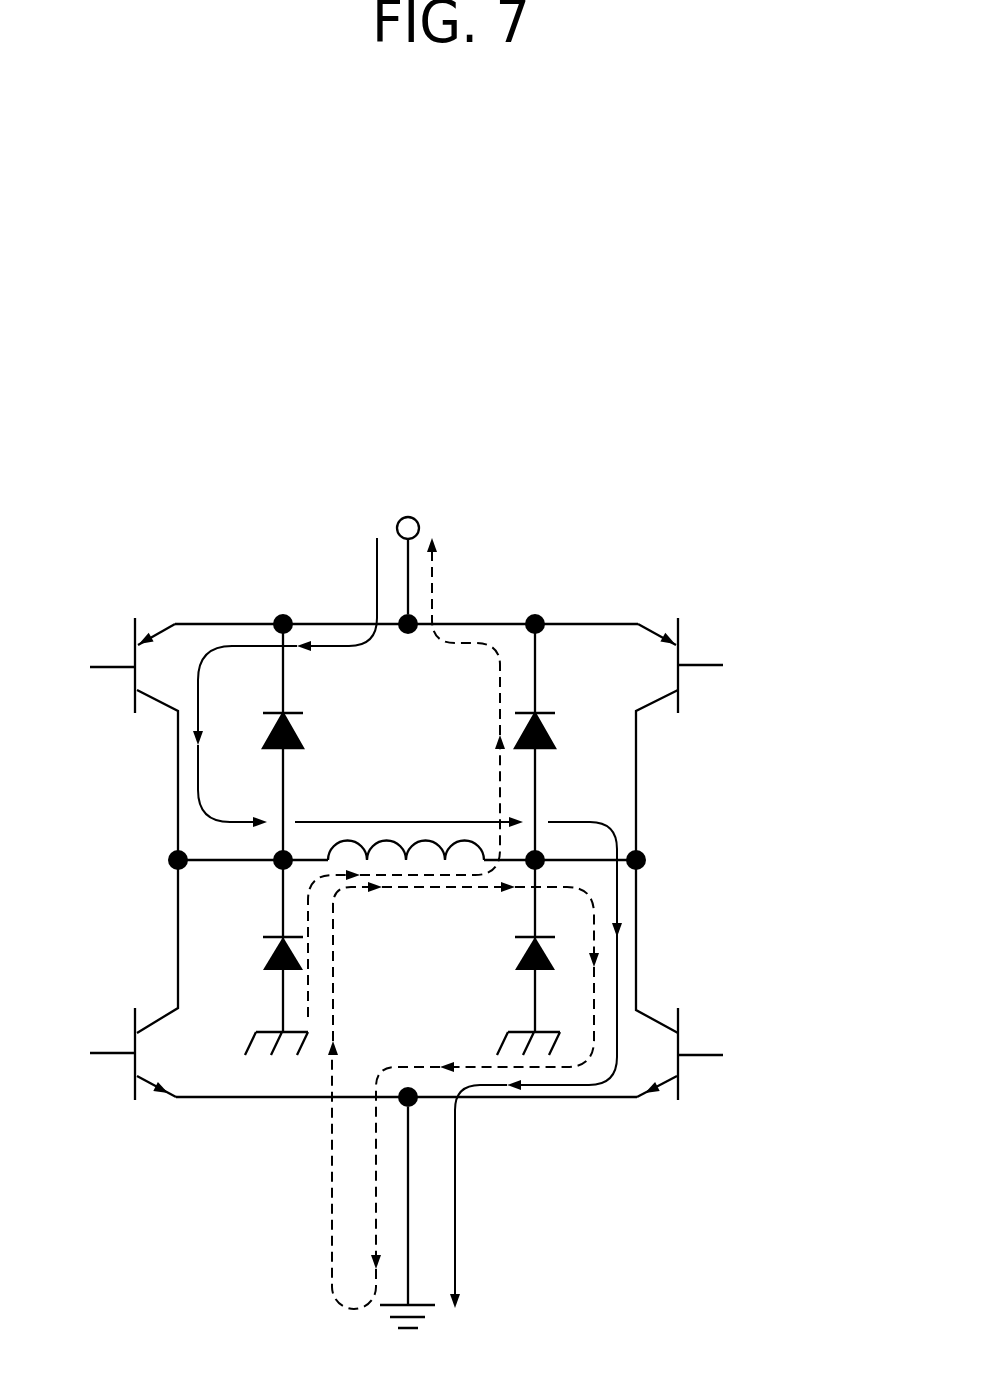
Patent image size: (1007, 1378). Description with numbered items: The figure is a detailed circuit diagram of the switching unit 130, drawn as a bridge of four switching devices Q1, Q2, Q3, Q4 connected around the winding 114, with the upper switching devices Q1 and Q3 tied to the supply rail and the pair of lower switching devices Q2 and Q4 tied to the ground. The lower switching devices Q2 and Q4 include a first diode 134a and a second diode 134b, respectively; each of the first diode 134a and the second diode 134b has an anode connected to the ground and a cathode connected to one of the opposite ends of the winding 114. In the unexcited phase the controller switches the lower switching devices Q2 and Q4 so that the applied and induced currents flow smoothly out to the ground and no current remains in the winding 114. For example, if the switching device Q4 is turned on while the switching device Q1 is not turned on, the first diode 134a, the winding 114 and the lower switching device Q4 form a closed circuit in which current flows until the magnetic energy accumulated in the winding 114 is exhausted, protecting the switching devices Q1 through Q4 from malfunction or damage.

The H-bridge driver circuit 130 is at (657, 507).
The winding 114 is at (390, 838).
The first diode 134a is at (263, 958).
The second diode 134b is at (552, 955).
The switching device Q1 is at (99, 665).
The lower switching device Q2 is at (106, 1054).
The switching device Q3 is at (715, 665).
The lower switching device Q4 is at (707, 1054).